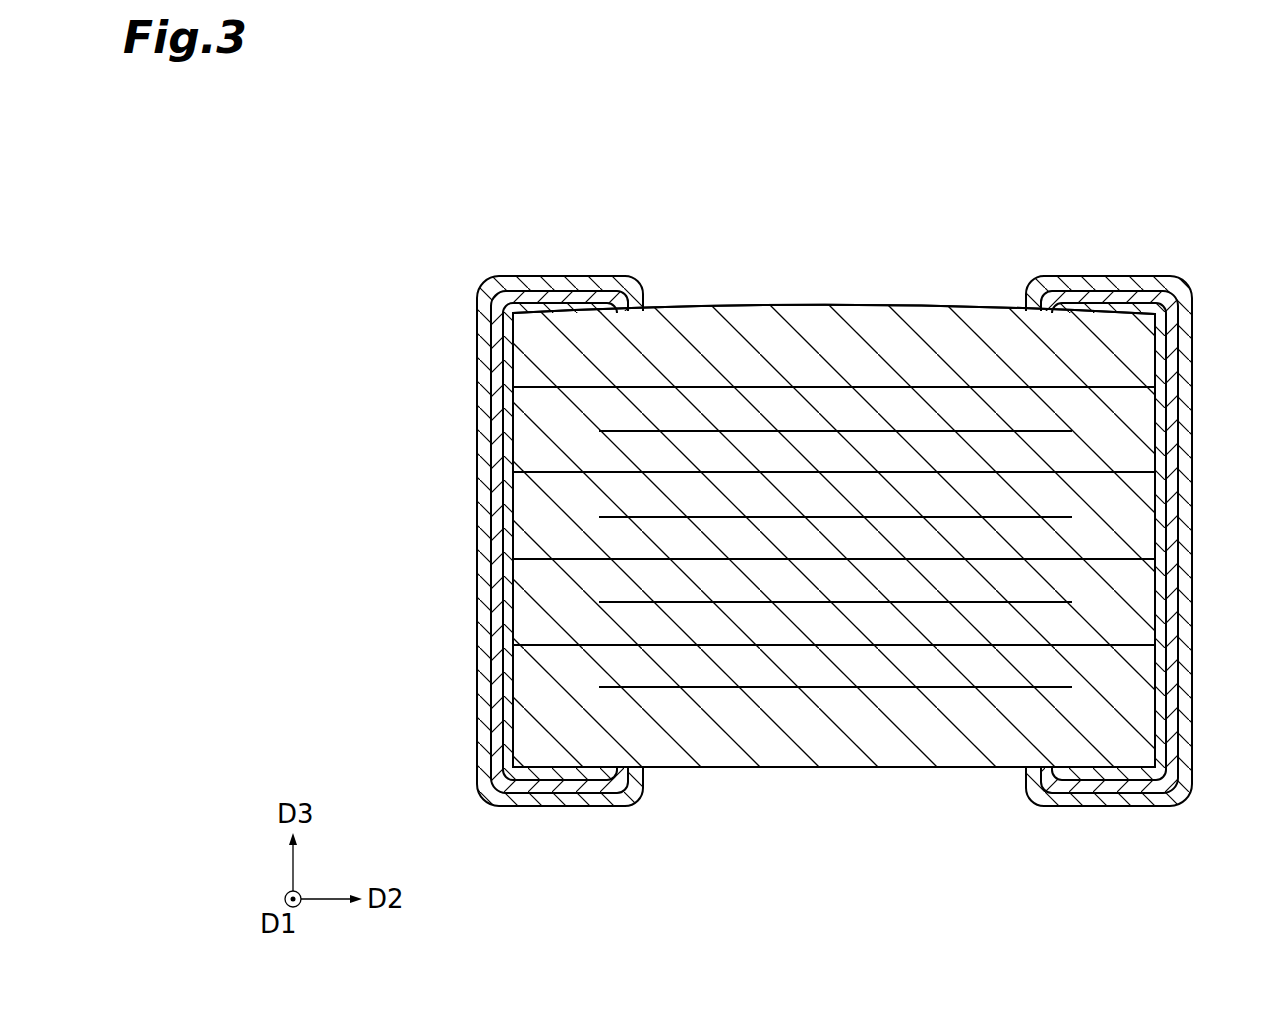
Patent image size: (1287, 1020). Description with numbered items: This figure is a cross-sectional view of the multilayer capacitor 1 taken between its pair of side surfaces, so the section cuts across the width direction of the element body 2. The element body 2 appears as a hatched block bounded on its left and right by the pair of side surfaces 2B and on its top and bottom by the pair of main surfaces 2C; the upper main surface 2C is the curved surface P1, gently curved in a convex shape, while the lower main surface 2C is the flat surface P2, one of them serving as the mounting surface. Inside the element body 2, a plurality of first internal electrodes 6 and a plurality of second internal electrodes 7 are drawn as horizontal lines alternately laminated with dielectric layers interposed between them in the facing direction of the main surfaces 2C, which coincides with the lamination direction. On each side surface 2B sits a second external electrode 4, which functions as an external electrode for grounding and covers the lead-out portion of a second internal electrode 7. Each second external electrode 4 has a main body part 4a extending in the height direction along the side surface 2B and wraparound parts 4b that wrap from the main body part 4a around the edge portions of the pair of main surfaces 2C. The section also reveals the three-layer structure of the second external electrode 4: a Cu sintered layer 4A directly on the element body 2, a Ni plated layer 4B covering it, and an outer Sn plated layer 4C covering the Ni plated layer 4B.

The multilayer capacitor 1 is at (468, 160).
The element body 2 is at (729, 285).
The side surface 2B is at (512, 524).
The main surface 2C is at (836, 306).
The second external electrode 4 is at (450, 453).
The Cu sintered layer 4A is at (508, 576).
The Ni plated layer 4B is at (497, 607).
The Sn plated layer 4C is at (483, 634).
The main body part 4a is at (482, 690).
The wraparound part 4b is at (586, 291).
The first internal electrode 6 is at (693, 431).
The second internal electrode 7 is at (992, 387).